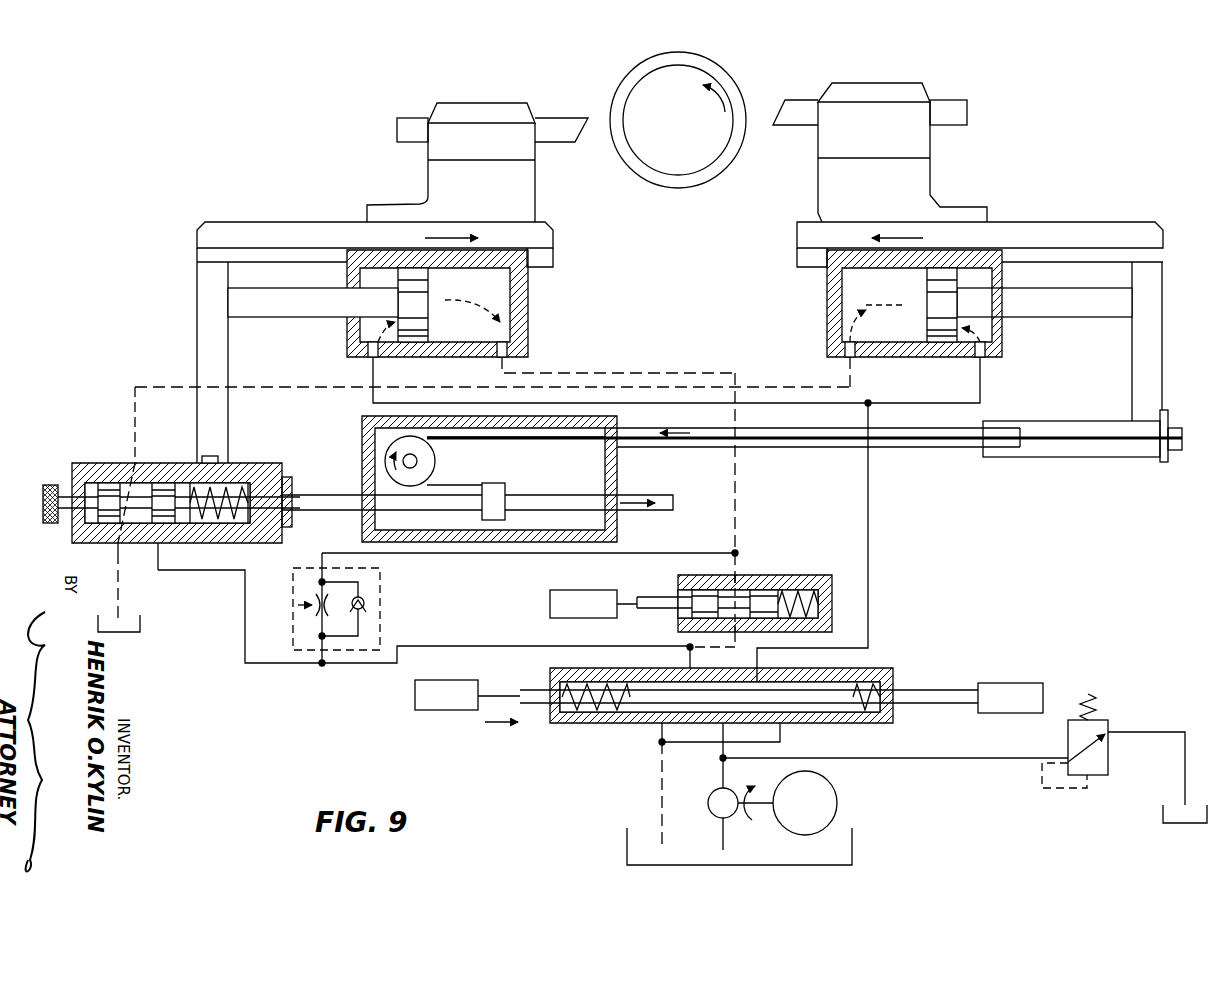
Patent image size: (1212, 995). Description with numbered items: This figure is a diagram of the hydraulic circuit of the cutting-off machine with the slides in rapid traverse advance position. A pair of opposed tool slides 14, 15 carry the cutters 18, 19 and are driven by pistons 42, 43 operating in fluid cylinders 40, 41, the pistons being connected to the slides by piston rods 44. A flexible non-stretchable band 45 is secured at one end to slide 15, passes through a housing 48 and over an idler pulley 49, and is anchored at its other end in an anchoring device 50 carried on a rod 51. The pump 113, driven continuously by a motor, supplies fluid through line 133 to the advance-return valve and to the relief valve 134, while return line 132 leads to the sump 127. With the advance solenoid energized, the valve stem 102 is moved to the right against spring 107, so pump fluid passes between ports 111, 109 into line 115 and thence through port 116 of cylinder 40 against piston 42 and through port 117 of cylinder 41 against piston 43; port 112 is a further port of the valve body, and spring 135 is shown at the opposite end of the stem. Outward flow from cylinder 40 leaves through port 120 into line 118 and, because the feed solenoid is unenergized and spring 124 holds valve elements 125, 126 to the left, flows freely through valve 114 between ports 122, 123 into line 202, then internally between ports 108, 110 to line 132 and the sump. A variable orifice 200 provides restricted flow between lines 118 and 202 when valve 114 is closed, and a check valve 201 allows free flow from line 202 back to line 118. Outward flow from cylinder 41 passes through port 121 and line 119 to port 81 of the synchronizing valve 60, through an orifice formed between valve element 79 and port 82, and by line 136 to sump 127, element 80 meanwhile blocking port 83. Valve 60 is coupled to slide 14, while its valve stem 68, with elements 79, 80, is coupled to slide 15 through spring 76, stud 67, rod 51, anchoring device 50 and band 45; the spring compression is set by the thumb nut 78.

The tool slide 14 is at (553, 243).
The tool slide 15 is at (797, 240).
The cutter 18 is at (573, 142).
The cutter 19 is at (797, 118).
The fluid cylinder 40 is at (528, 295).
The fluid cylinder 41 is at (827, 292).
The piston 42 is at (428, 296).
The piston 43 is at (950, 302).
The piston rod 44 is at (310, 317).
The band 45 is at (775, 440).
The housing 48 is at (617, 472).
The idler pulley 49 is at (435, 461).
The anchoring device 50 is at (505, 490).
The rod 51 is at (560, 497).
The valve means 60 is at (90, 460).
The stud 67 is at (292, 515).
The valve stem 68 is at (230, 500).
The compression spring 76 is at (210, 456).
The thumb nut 78 is at (48, 485).
The valve member 79 is at (109, 483).
The valve member 80 is at (163, 483).
The port 81 is at (133, 460).
The port 82 is at (117, 545).
The port 83 is at (160, 545).
The valve stem 102 is at (615, 723).
The spring 107 is at (880, 670).
The port 108 is at (685, 668).
The port 109 is at (760, 668).
The port 110 is at (660, 728).
The port 111 is at (720, 738).
The port 112 is at (785, 723).
The pump 113 is at (708, 803).
The valve 114 is at (752, 575).
The line 115 is at (868, 560).
The port 116 is at (373, 360).
The port 117 is at (985, 360).
The line 118 is at (640, 373).
The line 119 is at (775, 387).
The port 120 is at (502, 360).
The port 121 is at (852, 362).
The port 122 is at (680, 580).
The port 123 is at (716, 650).
The spring 124 is at (815, 585).
The valve element 125 is at (698, 618).
The valve element 126 is at (770, 596).
The sump 127 is at (132, 634).
The return flow line 132 is at (660, 825).
The line 133 is at (725, 770).
The relief valve 134 is at (1108, 755).
The spring 135 is at (570, 715).
The line 136 is at (120, 605).
The variable orifice 200 is at (296, 603).
The check valve 201 is at (366, 600).
The line 202 is at (505, 646).